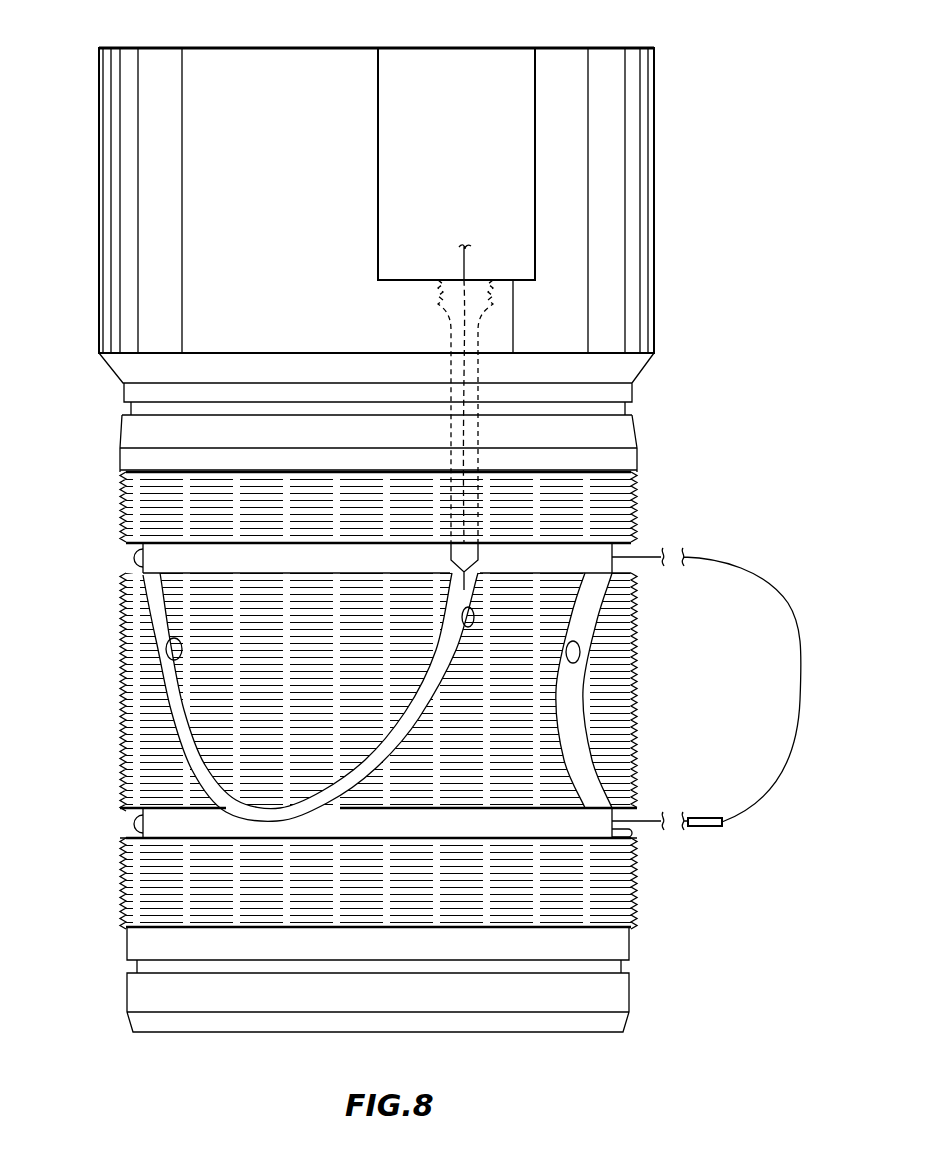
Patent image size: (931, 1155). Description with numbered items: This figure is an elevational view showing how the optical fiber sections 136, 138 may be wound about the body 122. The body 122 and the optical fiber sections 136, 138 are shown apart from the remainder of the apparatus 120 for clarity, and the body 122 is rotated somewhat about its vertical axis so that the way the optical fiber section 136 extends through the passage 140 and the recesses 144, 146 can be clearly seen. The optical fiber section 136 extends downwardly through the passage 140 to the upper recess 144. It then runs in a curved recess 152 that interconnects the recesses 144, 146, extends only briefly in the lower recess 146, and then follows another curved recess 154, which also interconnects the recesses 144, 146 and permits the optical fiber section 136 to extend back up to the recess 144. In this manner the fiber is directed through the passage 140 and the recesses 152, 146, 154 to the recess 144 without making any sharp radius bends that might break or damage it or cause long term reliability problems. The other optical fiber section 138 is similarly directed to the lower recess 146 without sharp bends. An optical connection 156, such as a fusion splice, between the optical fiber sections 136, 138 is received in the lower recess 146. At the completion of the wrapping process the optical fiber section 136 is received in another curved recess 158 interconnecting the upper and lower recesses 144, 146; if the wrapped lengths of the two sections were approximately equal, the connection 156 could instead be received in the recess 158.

The apparatus 120 is at (718, 95).
The body 122 is at (657, 197).
The optical fiber section 136 is at (460, 262).
The optical fiber section 138 is at (648, 823).
The passage 140 is at (453, 344).
The recess 144 is at (143, 548).
The recess 146 is at (135, 838).
The curved recess 152 is at (474, 627).
The curved recess 154 is at (166, 658).
The optical connection 156 is at (697, 818).
The curved recess 158 is at (580, 663).